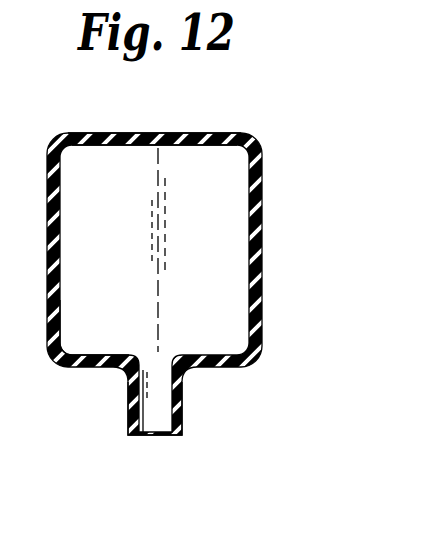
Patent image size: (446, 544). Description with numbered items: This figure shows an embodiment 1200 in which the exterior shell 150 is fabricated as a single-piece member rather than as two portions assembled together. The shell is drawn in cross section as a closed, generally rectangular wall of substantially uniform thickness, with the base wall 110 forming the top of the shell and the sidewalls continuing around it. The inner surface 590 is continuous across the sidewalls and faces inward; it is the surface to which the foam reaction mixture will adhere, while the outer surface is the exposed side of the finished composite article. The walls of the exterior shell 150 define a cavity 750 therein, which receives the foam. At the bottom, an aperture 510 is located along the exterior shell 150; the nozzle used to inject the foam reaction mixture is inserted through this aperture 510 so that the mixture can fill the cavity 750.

The base wall 110 is at (101, 133).
The inner surface 590 is at (181, 152).
The container 1200 is at (278, 180).
The exterior shell 150 is at (276, 282).
The cavity 750 is at (97, 311).
The aperture 510 is at (165, 423).